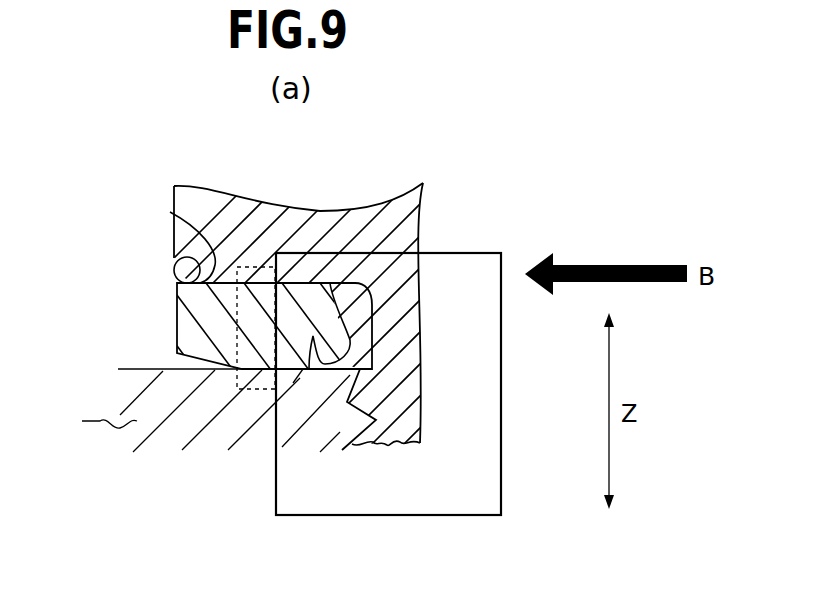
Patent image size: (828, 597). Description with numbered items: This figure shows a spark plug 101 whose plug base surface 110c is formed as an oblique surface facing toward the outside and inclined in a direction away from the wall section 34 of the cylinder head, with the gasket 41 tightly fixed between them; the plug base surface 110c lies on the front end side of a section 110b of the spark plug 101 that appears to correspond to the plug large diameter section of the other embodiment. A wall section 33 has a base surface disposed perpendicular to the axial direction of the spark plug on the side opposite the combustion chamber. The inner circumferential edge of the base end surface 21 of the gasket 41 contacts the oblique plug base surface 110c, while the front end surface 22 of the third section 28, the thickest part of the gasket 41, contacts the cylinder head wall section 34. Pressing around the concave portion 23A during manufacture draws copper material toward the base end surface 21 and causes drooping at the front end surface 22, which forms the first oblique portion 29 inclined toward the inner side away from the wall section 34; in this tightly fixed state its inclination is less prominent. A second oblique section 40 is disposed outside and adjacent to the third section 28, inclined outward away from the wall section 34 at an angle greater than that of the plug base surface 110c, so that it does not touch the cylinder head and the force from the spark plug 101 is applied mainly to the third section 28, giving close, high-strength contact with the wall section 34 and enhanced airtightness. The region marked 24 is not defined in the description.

The second portion of housing body 110b is at (233, 210).
The plug base surface 110c is at (170, 212).
The base end surface 21 is at (176, 248).
The front end surface 22 is at (250, 370).
The concave portion 23A is at (312, 369).
The engaging portion 24 is at (353, 370).
The third section 28 is at (276, 265).
The first oblique portion 29 is at (293, 383).
The wall section 33 is at (140, 369).
The wall section of the cylinder head 34 is at (131, 411).
The second oblique section 40 is at (188, 370).
The gasket 41 is at (186, 299).
The spark plug 101 is at (407, 233).